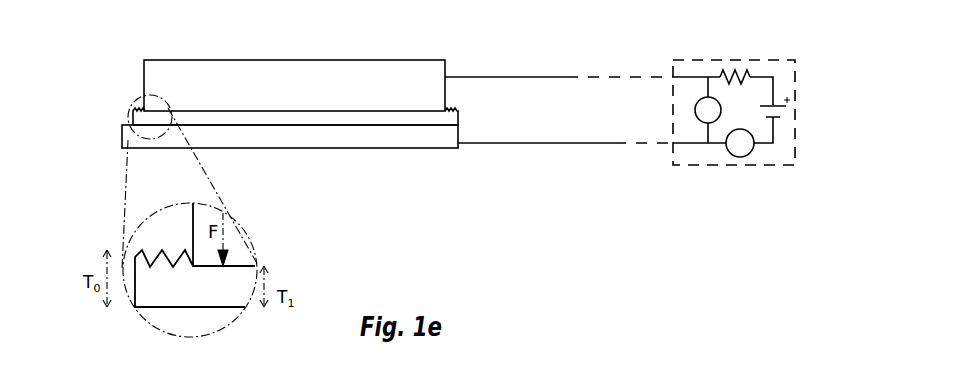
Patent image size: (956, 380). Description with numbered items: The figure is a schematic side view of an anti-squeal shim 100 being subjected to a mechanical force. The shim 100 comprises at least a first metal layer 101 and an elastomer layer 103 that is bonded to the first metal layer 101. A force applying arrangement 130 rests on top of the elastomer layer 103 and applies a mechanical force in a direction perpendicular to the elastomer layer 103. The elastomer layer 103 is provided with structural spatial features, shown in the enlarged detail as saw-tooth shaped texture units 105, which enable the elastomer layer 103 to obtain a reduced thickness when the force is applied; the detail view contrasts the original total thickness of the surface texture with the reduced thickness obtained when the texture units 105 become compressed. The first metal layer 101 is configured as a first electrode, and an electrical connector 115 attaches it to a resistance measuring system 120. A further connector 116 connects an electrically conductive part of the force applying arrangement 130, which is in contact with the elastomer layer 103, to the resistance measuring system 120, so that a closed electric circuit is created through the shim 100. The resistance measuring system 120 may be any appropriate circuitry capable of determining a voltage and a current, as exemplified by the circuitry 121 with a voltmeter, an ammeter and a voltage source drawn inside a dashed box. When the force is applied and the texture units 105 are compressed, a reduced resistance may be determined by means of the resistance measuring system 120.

The anti-squeal shim 100 is at (496, 172).
The first metal layer 101 is at (122, 138).
The elastomer layer 103 is at (133, 112).
The texture units 105 is at (138, 248).
The electrical connector 115 is at (575, 145).
The connector 116 is at (512, 77).
The resistance measuring system 120 is at (725, 60).
The circuitry 121 is at (703, 157).
The force applying arrangement 130 is at (144, 73).